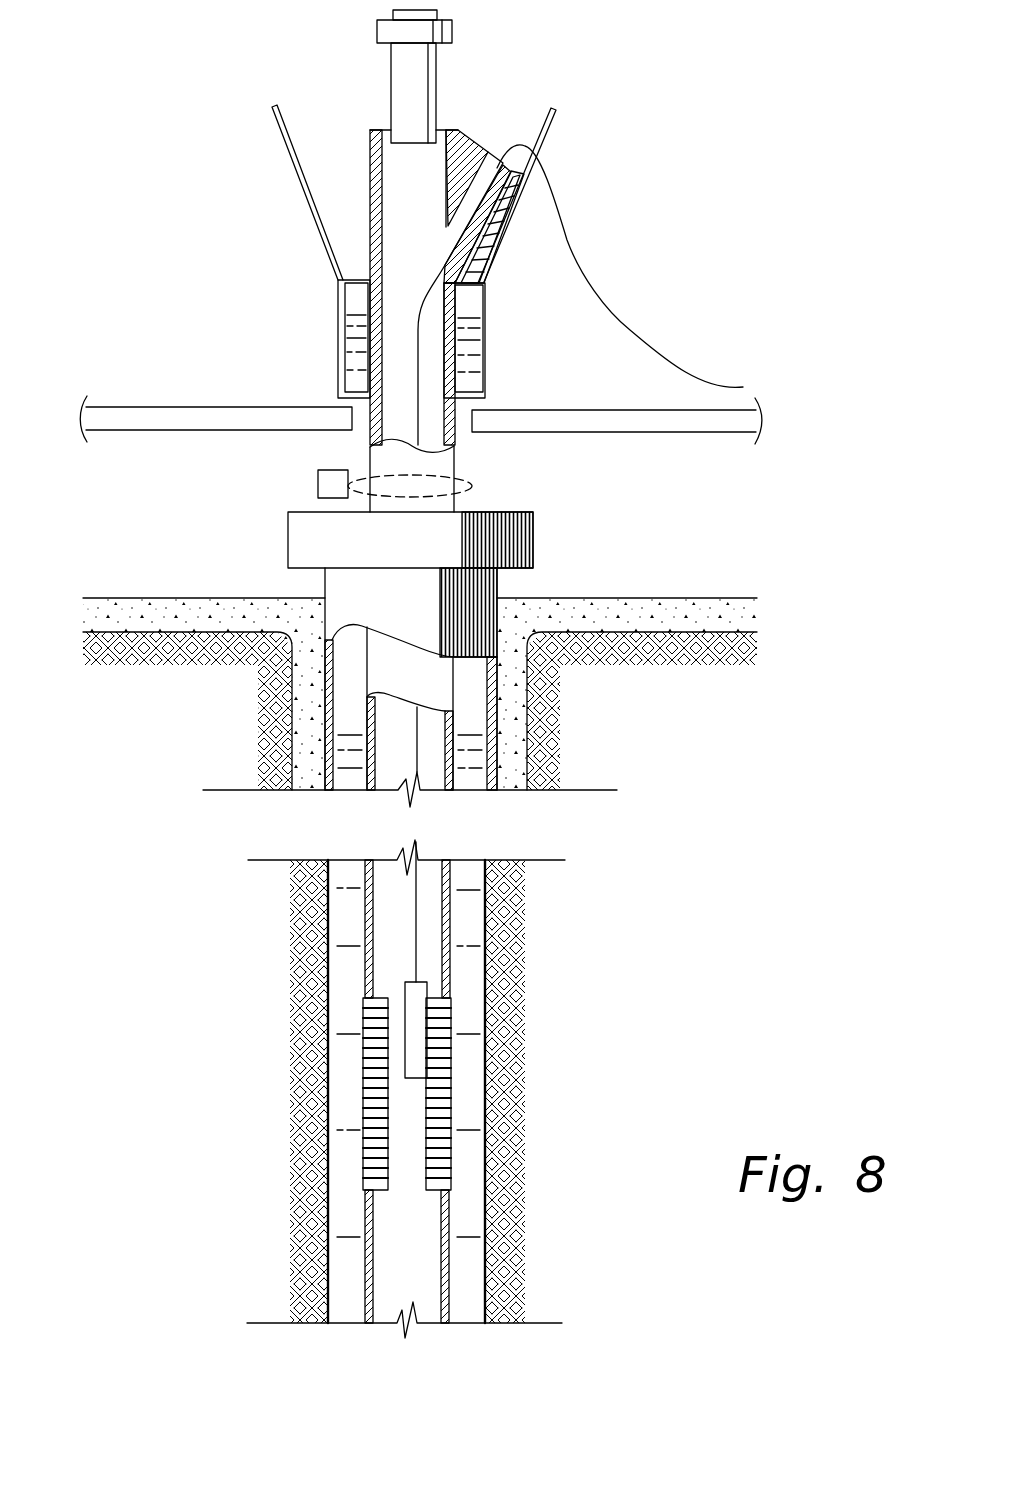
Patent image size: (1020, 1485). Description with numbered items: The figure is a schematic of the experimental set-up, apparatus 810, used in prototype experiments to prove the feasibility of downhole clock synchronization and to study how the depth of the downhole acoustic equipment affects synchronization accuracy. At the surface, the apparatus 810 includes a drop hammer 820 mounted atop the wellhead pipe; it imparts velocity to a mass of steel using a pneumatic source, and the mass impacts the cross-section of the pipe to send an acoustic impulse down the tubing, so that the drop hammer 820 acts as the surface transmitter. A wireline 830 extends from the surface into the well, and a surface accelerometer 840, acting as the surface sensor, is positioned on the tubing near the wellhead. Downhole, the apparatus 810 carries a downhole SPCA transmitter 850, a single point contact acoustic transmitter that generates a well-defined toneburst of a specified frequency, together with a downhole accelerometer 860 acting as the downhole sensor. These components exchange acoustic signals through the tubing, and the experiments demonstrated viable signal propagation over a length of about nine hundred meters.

The apparatus 810 is at (712, 172).
The drop hammer 820 is at (452, 32).
The wireline 830 is at (597, 280).
The surface accelerometer 840 is at (472, 486).
The downhole SPCA transmitter 850 is at (452, 1025).
The downhole accelerometer 860 is at (415, 1065).